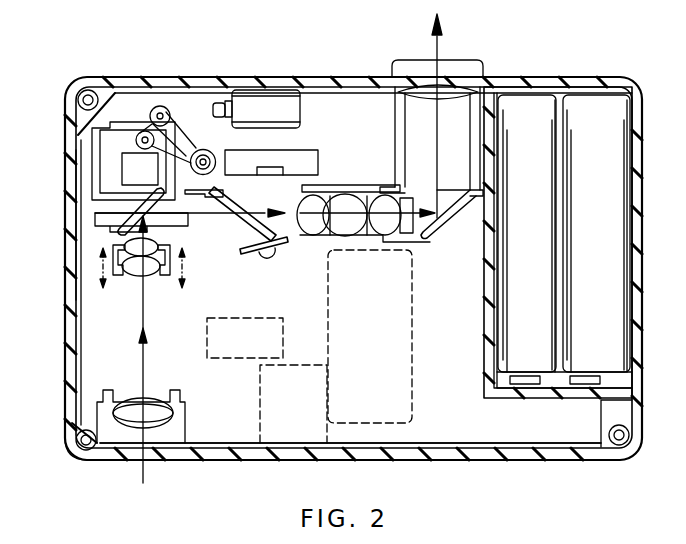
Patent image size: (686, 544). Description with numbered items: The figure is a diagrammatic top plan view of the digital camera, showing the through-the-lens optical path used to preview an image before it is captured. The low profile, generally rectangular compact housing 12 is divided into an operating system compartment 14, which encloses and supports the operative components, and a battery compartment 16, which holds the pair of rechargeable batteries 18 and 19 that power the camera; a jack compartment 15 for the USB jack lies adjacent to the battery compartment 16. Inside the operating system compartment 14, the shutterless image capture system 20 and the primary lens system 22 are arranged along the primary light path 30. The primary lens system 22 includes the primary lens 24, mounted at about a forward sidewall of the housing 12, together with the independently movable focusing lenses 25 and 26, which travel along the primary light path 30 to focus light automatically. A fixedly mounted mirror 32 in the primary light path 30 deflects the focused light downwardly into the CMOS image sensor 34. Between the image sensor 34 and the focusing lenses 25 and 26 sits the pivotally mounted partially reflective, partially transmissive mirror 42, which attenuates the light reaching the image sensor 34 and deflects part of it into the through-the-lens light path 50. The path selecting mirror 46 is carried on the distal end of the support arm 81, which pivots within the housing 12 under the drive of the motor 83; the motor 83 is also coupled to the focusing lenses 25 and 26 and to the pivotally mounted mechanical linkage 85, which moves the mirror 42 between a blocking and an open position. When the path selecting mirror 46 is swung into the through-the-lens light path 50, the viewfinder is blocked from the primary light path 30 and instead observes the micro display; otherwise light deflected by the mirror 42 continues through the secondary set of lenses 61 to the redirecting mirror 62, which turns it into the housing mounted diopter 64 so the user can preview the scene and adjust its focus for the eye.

The housing 12 is at (565, 460).
The operating system compartment 14 is at (484, 446).
The jack compartment 15 is at (0, 50).
The battery compartment 16 is at (540, 95).
The rechargeable battery 18 is at (510, 108).
The rechargeable battery 19 is at (598, 110).
The shutterless image capture system 20 is at (54, 198).
The primary lens system 22 is at (78, 462).
The primary lens 24 is at (152, 410).
The focusing lens 25 is at (123, 265).
The focusing lens 26 is at (112, 240).
The primary light path 30 is at (148, 362).
The fixedly mounted mirror 32 is at (132, 160).
The image sensor 34 is at (108, 155).
The partially reflective, partially transmissive mirror 42 is at (78, 213).
The path selecting mirror 46 is at (243, 253).
The through-the-lens light path 50 is at (210, 215).
The secondary set of lenses 61 is at (365, 181).
The redirecting mirror 62 is at (446, 182).
The diopter 64 is at (448, 88).
The support arm 81 is at (270, 256).
The motor 83 is at (277, 100).
The mechanical linkage 85 is at (206, 150).